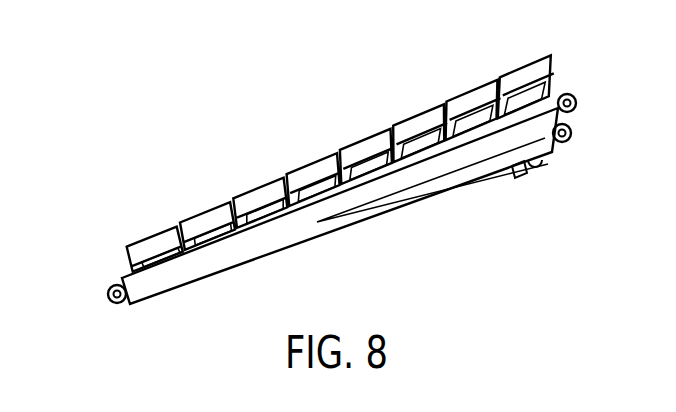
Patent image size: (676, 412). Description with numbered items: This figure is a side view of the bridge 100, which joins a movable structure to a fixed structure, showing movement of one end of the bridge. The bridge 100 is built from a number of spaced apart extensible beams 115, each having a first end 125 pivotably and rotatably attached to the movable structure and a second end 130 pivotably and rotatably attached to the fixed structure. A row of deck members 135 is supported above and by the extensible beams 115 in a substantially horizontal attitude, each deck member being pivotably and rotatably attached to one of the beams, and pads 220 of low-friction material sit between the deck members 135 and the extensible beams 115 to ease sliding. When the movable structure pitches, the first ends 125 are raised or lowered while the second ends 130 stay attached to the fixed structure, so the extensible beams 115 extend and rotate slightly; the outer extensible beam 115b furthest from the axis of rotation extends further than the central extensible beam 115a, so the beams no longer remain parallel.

The bridge 100 is at (226, 110).
The extensible beams 115 is at (282, 254).
The central extensible beam 115a is at (515, 170).
The outer extensible beam 115b is at (472, 190).
The first end 125 is at (565, 85).
The second end 130 is at (85, 301).
The deck members 135 is at (535, 58).
The pads 220 is at (365, 157).